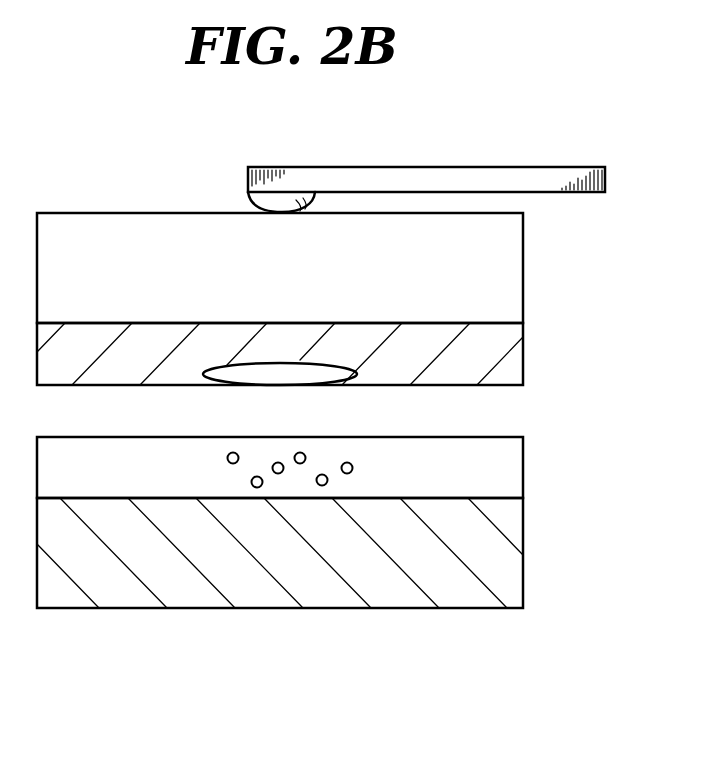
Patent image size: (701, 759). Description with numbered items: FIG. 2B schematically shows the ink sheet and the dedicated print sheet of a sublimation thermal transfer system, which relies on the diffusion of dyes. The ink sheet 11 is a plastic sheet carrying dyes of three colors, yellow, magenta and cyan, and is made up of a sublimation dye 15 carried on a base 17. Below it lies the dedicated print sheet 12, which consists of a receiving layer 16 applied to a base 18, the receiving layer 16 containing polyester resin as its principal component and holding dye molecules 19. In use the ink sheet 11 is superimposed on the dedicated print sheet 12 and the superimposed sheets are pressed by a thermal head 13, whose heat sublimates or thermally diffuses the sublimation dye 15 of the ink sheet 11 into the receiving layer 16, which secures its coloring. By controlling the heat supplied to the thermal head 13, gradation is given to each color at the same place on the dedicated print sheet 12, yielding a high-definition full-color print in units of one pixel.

The ink sheet 11 is at (311, 251).
The dedicated print sheet 12 is at (311, 544).
The thermal head 13 is at (517, 165).
The sublimation dye 15 is at (525, 365).
The receiving layer 16 is at (525, 455).
The base 17 is at (525, 280).
The base 18 is at (525, 550).
The dye molecules 19 is at (302, 450).